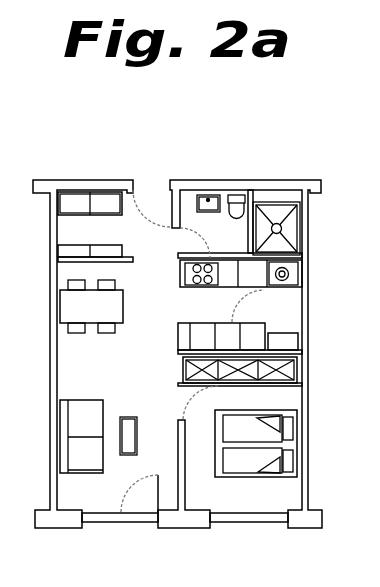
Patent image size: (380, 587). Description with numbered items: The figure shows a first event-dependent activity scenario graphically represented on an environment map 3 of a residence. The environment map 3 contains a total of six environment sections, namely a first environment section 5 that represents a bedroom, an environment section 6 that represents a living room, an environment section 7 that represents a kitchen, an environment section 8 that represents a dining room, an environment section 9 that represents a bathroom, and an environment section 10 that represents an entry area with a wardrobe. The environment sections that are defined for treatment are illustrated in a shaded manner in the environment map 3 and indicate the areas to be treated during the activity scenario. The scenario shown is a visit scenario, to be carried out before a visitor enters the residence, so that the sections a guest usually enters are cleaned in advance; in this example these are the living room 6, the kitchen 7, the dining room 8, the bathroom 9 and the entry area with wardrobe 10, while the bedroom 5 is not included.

The environment map 3 is at (279, 177).
The first environment section 5 is at (270, 402).
The environment section 6 is at (107, 492).
The environment section 7 is at (270, 310).
The environment section 8 is at (97, 373).
The environment section 9 is at (213, 227).
The environment section 10 is at (105, 233).